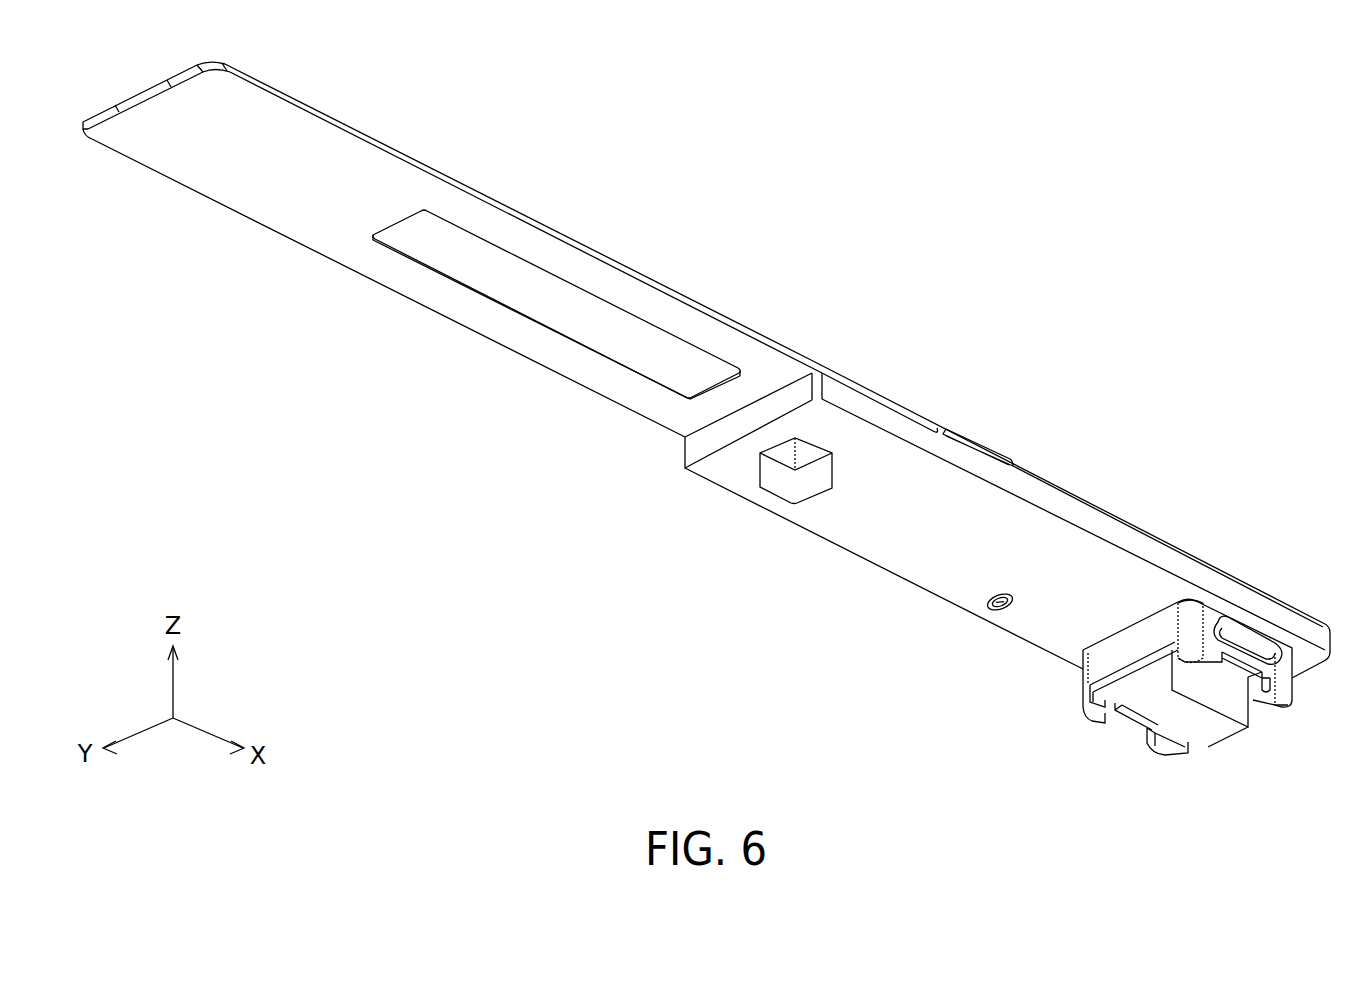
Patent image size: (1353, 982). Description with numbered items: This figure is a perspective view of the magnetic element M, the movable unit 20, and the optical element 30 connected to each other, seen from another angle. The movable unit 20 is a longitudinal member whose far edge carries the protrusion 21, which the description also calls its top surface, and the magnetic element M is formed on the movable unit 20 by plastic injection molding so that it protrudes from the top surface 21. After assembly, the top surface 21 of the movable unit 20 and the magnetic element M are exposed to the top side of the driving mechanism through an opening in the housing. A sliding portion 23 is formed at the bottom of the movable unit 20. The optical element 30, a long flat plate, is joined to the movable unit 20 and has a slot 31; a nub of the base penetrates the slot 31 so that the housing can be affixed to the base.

The movable unit 20 is at (1234, 578).
The protrusion 21 is at (1100, 506).
The sliding portion 23 is at (792, 486).
The optical element 30 is at (348, 123).
The slot 31 is at (563, 247).
The magnetic element M is at (1095, 722).